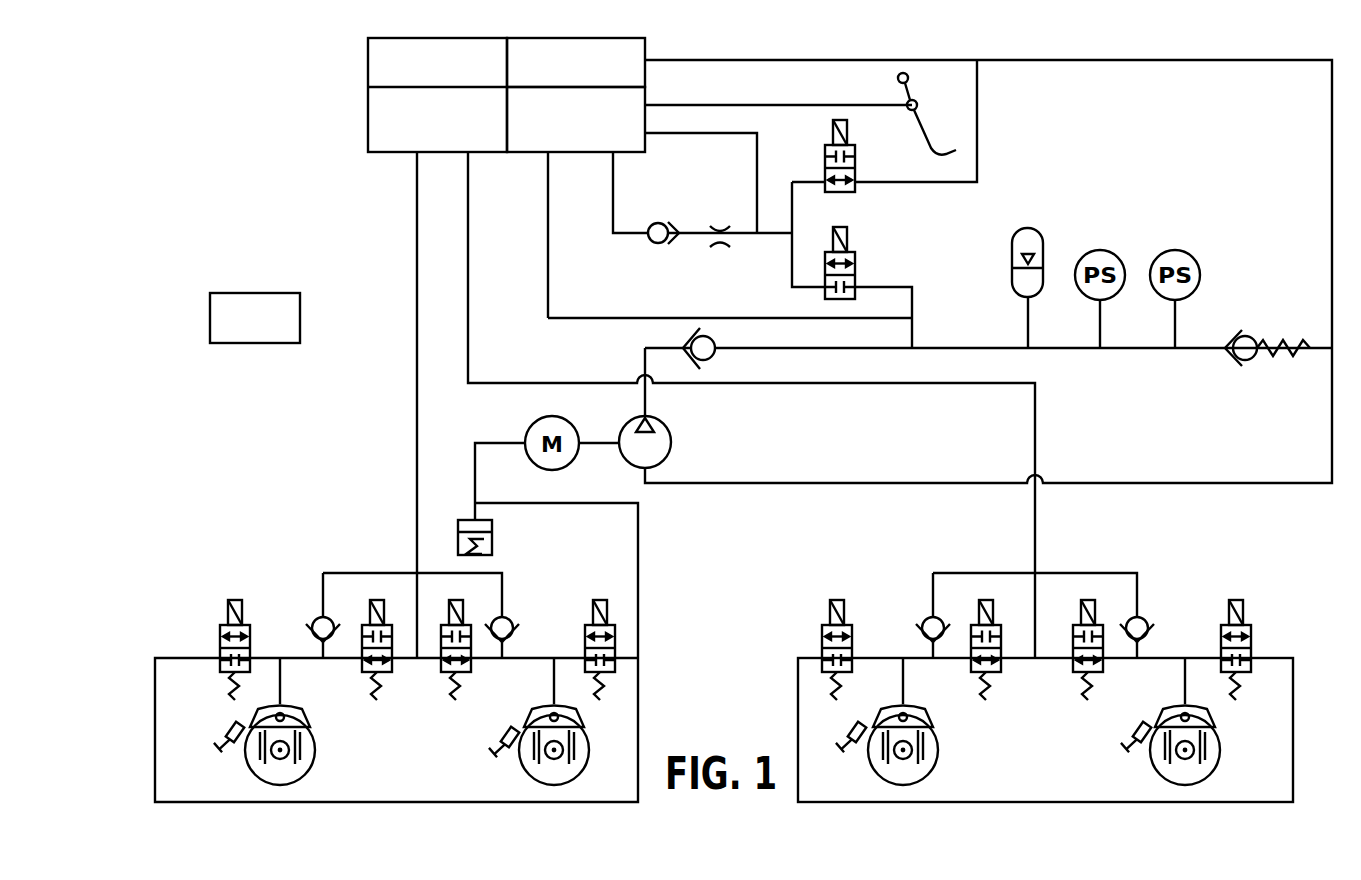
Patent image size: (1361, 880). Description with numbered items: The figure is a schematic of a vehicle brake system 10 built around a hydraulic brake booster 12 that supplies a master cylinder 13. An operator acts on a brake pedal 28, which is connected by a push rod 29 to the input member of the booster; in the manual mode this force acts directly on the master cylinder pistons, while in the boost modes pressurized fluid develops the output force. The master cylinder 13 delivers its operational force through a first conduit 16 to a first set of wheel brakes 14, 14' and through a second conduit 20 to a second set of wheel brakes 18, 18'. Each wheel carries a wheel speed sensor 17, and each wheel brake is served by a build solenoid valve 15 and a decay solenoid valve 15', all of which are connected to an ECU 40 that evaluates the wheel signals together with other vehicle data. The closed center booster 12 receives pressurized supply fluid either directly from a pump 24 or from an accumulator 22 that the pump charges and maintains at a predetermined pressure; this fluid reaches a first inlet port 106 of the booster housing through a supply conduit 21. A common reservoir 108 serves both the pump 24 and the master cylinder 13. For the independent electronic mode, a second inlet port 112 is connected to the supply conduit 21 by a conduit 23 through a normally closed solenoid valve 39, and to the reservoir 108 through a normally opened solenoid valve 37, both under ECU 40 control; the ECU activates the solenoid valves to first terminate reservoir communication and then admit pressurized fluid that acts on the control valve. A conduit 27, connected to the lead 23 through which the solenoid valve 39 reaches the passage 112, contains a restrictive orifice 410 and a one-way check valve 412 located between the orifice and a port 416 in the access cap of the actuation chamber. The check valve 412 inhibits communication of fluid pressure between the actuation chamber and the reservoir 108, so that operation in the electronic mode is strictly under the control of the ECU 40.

The brake system 10 is at (343, 411).
The hydraulic brake booster 12 is at (683, 81).
The master cylinder 13 is at (368, 120).
The wheel brake of the first set 14 is at (312, 721).
The wheel brake of the first set 14' is at (521, 729).
The build solenoid valve 15 is at (719, 639).
The decay solenoid valve 15' is at (741, 632).
The first conduit 16 is at (417, 479).
The wheel speed sensor 17 is at (228, 729).
The wheel brake of the second set 18 is at (931, 725).
The wheel brake of the second set 18' is at (1217, 722).
The second conduit 20 is at (468, 253).
The supply conduit 21 is at (598, 318).
The accumulator 22 is at (1036, 233).
The conduit 23 is at (792, 250).
The pump 24 is at (672, 448).
The conduit 27 is at (748, 233).
The brake pedal 28 is at (922, 126).
The push rod 29 is at (810, 105).
The normally opened solenoid valve 37 is at (858, 265).
The normally closed solenoid valve 39 is at (856, 168).
The ECU 40 is at (250, 295).
The first inlet port 106 is at (546, 154).
The reservoir 108 is at (523, 45).
The second inlet port 112 is at (616, 160).
The restrictive orifice 410 is at (716, 228).
The one-way check valve 412 is at (648, 240).
The port 416 is at (648, 136).